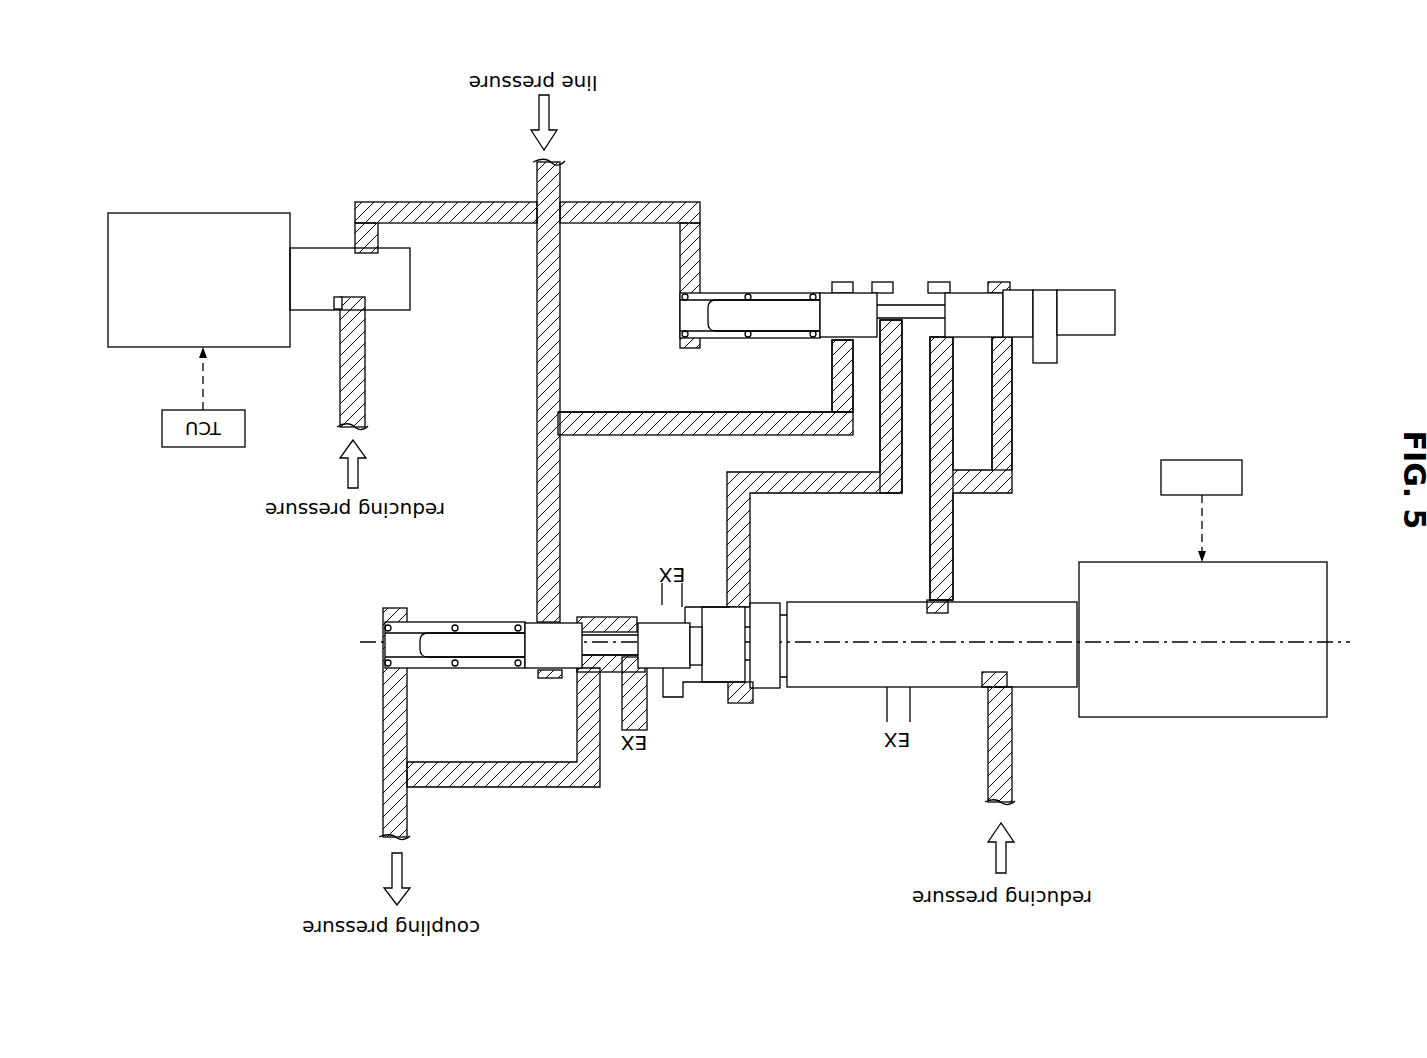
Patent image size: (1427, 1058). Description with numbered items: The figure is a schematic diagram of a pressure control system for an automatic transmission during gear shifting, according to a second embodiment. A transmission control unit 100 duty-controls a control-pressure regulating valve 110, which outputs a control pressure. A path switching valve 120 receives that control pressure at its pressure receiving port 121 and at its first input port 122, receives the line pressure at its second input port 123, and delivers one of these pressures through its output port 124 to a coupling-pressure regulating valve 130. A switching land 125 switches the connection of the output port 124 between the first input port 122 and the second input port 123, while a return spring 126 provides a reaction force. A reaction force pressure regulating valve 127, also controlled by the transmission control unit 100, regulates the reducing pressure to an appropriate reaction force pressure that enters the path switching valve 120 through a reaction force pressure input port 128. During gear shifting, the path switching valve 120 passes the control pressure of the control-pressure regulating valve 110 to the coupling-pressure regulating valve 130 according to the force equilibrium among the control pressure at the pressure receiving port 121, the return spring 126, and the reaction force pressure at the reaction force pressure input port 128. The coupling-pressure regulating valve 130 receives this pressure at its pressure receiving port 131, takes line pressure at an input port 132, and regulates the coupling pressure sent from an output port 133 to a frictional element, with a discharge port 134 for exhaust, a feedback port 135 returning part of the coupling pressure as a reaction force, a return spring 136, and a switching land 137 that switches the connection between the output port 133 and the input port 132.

The transmission control unit 100 is at (1200, 460).
The control-pressure regulating valve 110 is at (1282, 718).
The path switching valve 120 is at (1018, 283).
The pressure receiving port 121 is at (1013, 342).
The first input port 122 is at (933, 335).
The second input port 123 is at (842, 340).
The output port 124 is at (885, 327).
The switching land 125 is at (968, 305).
The return spring 126 is at (748, 293).
The reaction force pressure regulating valve 127 is at (142, 348).
The reaction force pressure input port 128 is at (688, 288).
The coupling-pressure regulating valve 130 is at (501, 673).
The pressure receiving port 131 is at (705, 604).
The input port 132 is at (544, 616).
The output port 133 is at (600, 737).
The discharge port 134 is at (643, 693).
The feedback port 135 is at (397, 673).
The return spring 136 is at (385, 627).
The switching land 137 is at (568, 617).